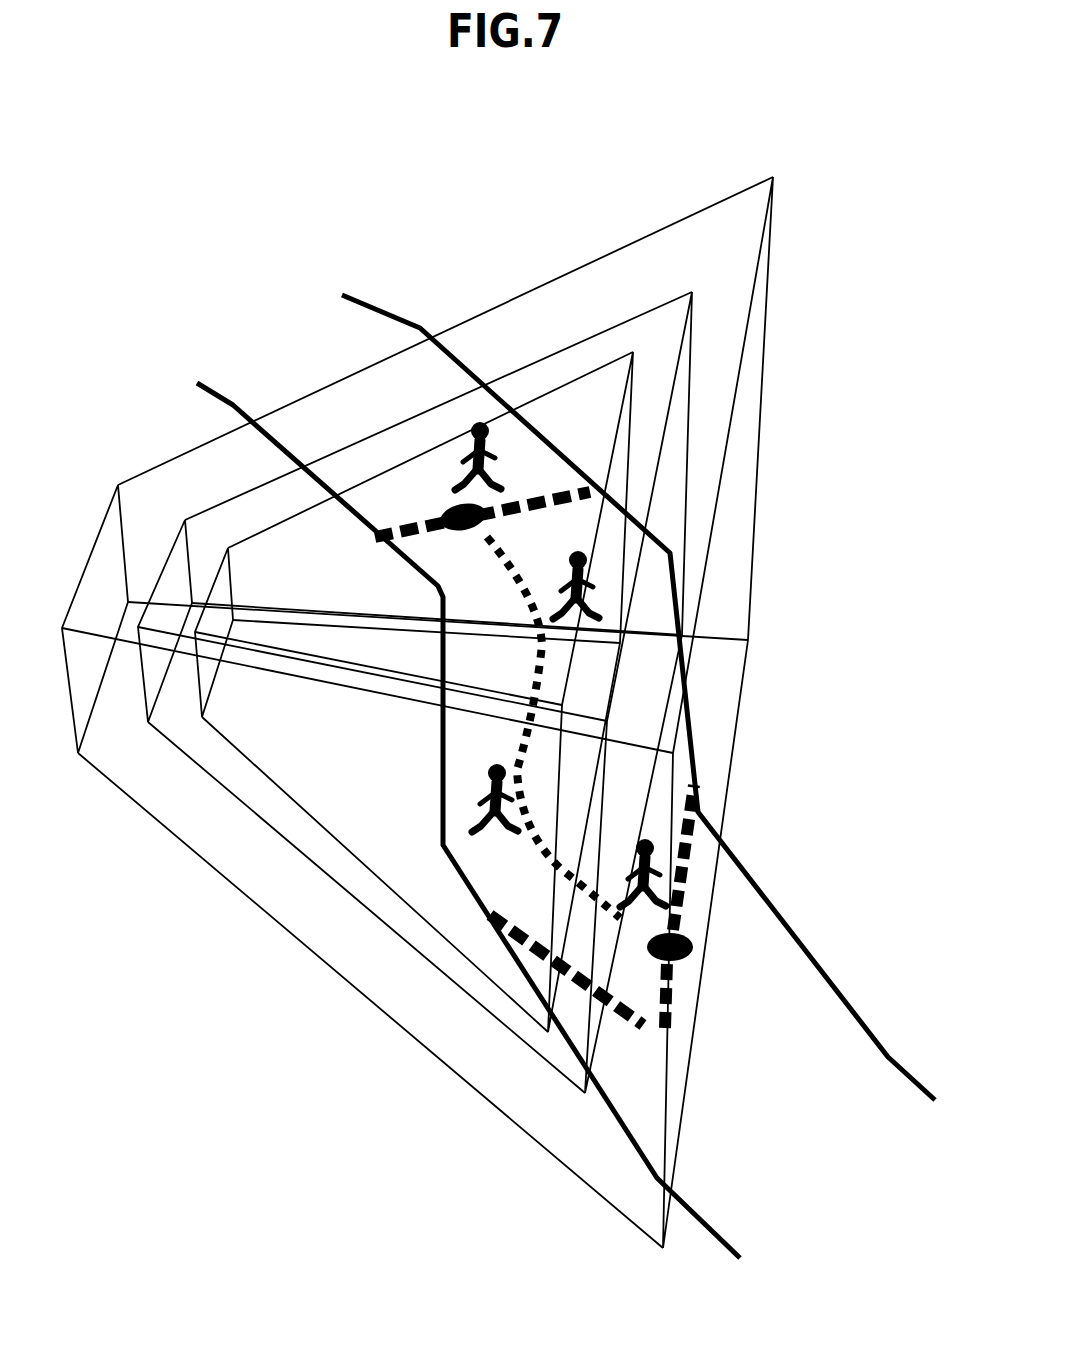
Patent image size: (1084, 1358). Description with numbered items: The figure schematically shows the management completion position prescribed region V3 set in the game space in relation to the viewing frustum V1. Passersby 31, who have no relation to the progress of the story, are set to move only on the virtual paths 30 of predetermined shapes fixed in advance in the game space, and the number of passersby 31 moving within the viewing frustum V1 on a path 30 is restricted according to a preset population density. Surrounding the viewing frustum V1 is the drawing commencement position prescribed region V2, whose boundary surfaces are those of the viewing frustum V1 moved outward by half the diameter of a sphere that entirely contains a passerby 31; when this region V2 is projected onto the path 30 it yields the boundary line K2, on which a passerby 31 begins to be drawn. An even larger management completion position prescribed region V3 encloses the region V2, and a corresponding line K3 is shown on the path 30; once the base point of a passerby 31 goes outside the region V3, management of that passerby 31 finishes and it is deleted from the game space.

The viewing frustum V1 is at (593, 373).
The drawing commencement position prescribed region V2 is at (658, 305).
The management completion position prescribed region V3 is at (702, 210).
The path 30 is at (840, 1060).
The passerby 31 is at (470, 437).
The boundary line K2 is at (407, 522).
The movement trajectory K3 is at (627, 1030).